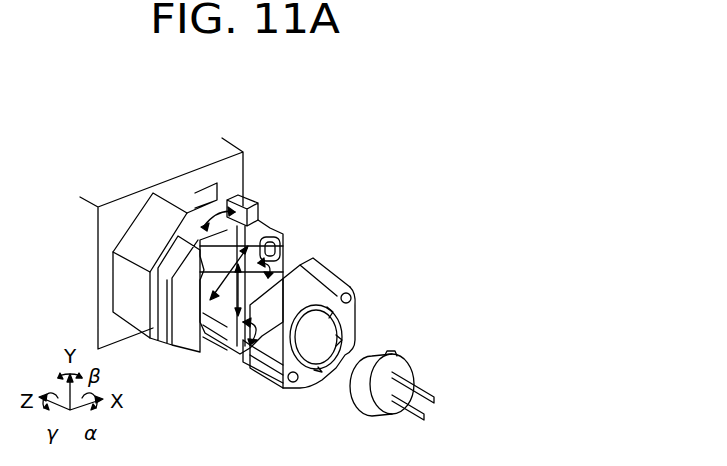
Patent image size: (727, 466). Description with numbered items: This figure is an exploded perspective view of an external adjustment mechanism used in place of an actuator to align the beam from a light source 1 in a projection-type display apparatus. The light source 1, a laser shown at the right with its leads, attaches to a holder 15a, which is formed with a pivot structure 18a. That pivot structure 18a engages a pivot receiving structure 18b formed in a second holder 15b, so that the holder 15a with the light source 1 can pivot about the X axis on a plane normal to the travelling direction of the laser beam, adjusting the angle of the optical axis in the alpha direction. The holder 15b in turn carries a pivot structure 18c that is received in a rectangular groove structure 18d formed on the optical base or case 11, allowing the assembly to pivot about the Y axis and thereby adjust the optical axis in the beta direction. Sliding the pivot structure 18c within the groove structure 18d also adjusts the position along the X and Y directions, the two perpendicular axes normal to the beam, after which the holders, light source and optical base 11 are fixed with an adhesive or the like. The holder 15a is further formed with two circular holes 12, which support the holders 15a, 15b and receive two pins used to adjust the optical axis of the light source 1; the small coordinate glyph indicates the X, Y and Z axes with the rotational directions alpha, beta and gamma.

The light source 1 is at (388, 353).
The optical base (case) 11 is at (243, 200).
The circular holes 12 is at (353, 297).
The holder 15a is at (328, 278).
The holder 15b is at (266, 240).
The pivot structure 18a is at (242, 337).
The pivot receiving structure 18b is at (275, 268).
The pivot structure 18c is at (233, 207).
The rectangular groove structure 18d is at (190, 197).